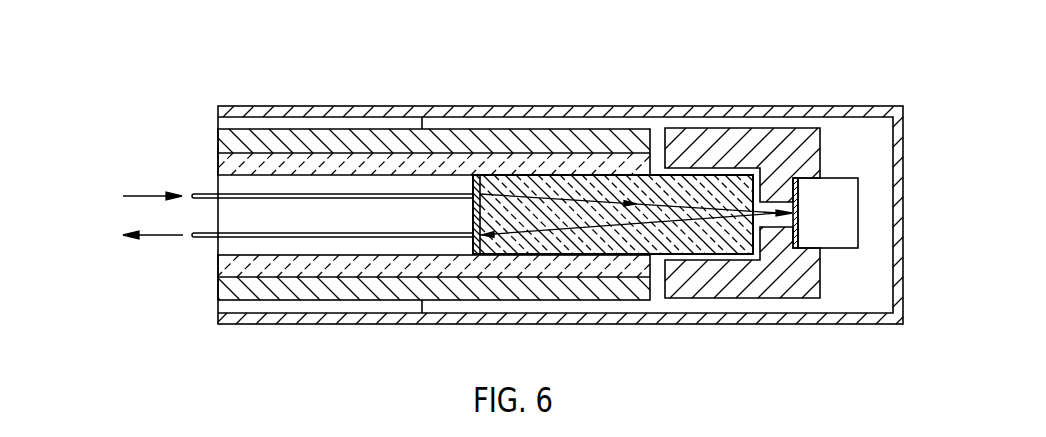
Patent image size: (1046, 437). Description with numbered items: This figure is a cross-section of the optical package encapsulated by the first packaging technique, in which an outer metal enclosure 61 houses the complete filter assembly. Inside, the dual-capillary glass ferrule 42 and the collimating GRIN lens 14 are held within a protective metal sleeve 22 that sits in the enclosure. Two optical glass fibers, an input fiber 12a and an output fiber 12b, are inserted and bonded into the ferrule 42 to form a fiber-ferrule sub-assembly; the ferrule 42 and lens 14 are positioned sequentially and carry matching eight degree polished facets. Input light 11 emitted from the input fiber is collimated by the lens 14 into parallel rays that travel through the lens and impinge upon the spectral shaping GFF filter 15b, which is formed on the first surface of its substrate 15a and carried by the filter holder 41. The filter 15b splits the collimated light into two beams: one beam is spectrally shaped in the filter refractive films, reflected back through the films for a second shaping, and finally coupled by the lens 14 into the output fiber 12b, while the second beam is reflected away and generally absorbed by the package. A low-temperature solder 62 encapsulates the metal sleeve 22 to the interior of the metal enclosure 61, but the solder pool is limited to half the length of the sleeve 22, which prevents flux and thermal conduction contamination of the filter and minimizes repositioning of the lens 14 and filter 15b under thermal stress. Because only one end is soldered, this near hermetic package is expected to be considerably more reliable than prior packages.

The input light 11 is at (138, 190).
The input optical glass fiber 12a is at (207, 190).
The output optical glass fiber 12b is at (207, 242).
The collimating GRIN lens 14 is at (570, 243).
The substrate 15a is at (835, 240).
The spectral shaping GFF filter 15b is at (793, 248).
The metal sleeve 22 is at (467, 137).
The filter holder 41 is at (820, 160).
The dual-capillary glass ferrule 42 is at (310, 259).
The outer metal enclosure 61 is at (755, 107).
The low-temperature solder 62 is at (312, 123).